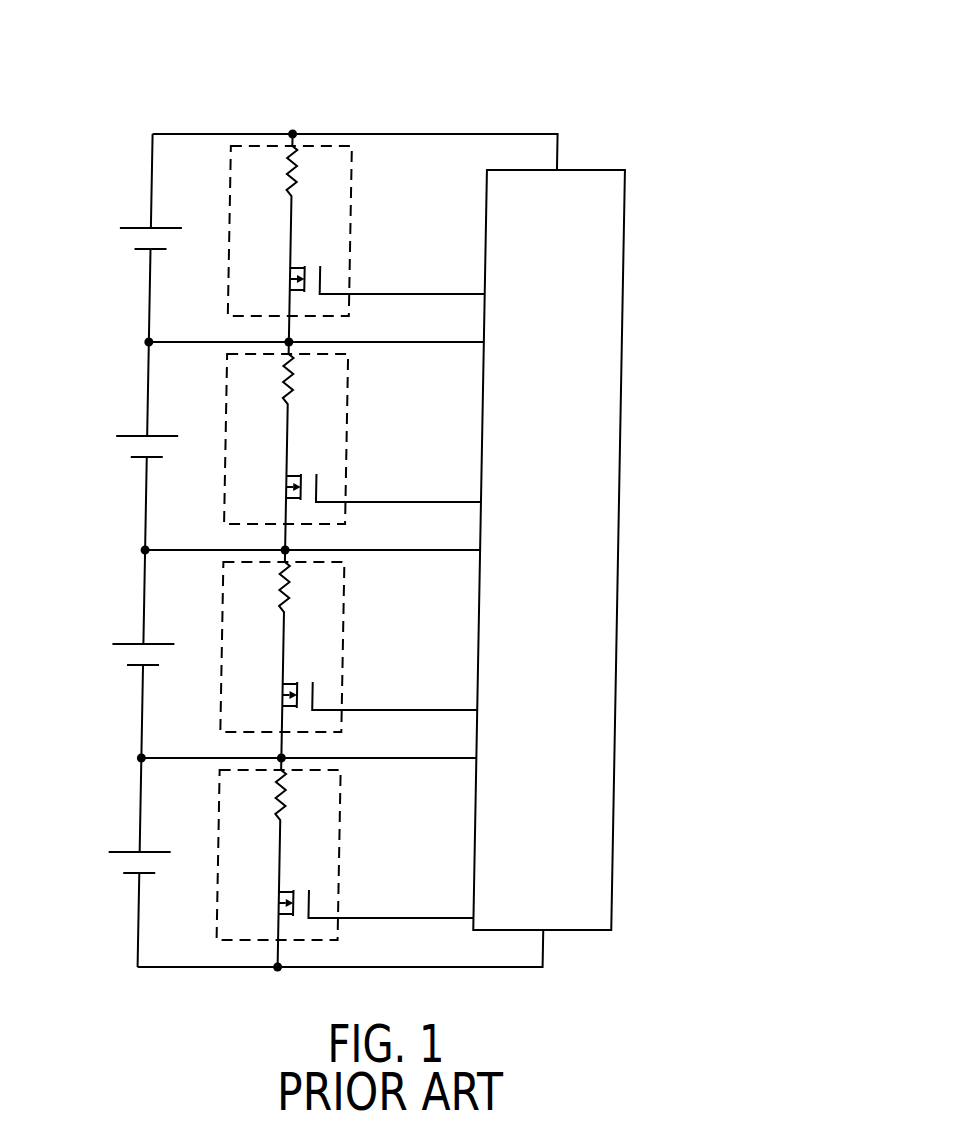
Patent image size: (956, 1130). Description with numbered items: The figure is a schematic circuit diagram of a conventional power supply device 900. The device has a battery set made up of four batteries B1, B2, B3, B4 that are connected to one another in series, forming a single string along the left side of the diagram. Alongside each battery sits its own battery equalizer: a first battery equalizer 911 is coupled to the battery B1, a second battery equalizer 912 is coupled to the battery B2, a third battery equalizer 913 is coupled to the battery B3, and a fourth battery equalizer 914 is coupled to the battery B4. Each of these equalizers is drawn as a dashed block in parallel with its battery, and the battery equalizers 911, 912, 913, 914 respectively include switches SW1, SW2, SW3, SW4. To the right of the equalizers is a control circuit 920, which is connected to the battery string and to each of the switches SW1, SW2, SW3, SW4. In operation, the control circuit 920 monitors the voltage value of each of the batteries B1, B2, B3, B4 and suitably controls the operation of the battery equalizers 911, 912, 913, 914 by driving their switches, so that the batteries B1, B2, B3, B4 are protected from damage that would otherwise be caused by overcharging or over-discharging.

The power supply device 900 is at (388, 487).
The battery equalizer 911 is at (357, 238).
The battery equalizer 912 is at (354, 446).
The battery equalizer 913 is at (350, 654).
The battery equalizer 914 is at (346, 862).
The control circuit 920 is at (630, 550).
The battery B1 is at (133, 238).
The battery B2 is at (129, 446).
The battery B3 is at (125, 654).
The battery B4 is at (122, 862).
The switch SW1 is at (364, 281).
The switch SW2 is at (360, 489).
The switch SW3 is at (356, 697).
The switch SW4 is at (352, 905).